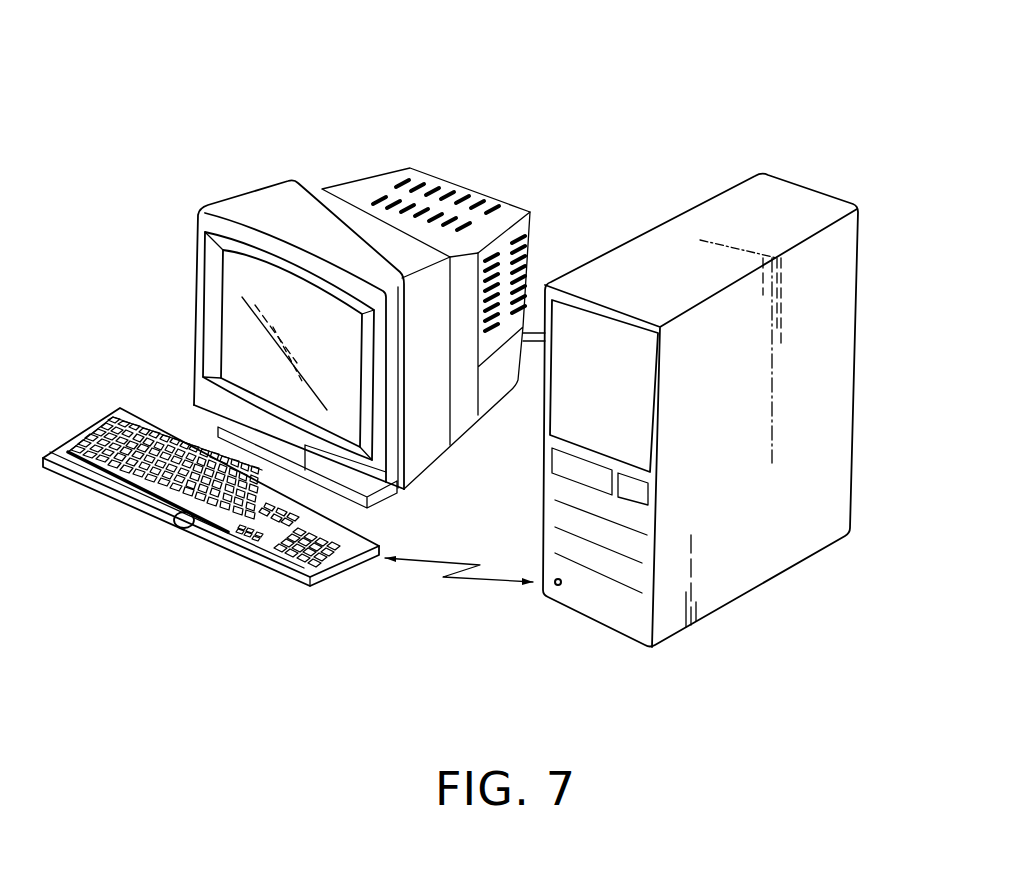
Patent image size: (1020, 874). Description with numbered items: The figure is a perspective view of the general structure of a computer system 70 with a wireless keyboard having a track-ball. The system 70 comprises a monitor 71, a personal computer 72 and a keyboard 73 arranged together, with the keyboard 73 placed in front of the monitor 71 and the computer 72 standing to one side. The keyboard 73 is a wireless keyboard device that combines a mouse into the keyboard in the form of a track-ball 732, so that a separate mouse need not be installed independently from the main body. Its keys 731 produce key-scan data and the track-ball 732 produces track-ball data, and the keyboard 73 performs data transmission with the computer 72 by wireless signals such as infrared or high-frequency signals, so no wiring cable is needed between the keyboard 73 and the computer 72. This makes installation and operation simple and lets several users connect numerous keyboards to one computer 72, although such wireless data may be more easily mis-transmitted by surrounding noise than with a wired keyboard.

The computer system 70 is at (750, 118).
The monitor 71 is at (263, 197).
The personal computer 72 is at (850, 313).
The keyboard 73 is at (326, 583).
The keys 731 is at (102, 422).
The track-ball 732 is at (176, 530).